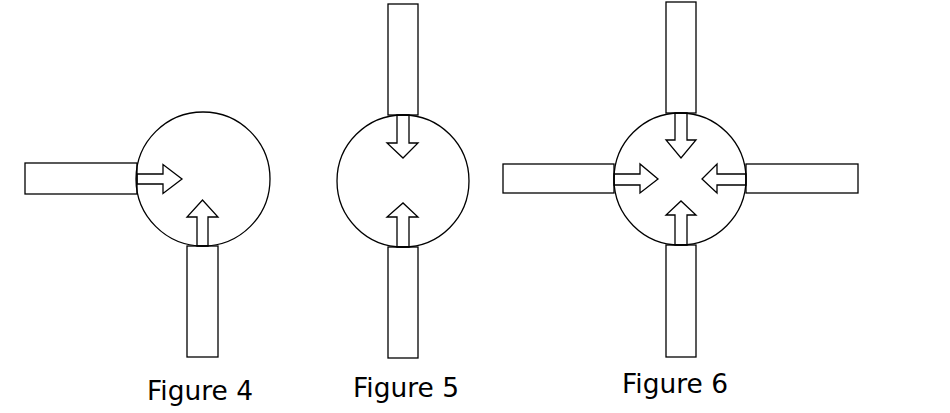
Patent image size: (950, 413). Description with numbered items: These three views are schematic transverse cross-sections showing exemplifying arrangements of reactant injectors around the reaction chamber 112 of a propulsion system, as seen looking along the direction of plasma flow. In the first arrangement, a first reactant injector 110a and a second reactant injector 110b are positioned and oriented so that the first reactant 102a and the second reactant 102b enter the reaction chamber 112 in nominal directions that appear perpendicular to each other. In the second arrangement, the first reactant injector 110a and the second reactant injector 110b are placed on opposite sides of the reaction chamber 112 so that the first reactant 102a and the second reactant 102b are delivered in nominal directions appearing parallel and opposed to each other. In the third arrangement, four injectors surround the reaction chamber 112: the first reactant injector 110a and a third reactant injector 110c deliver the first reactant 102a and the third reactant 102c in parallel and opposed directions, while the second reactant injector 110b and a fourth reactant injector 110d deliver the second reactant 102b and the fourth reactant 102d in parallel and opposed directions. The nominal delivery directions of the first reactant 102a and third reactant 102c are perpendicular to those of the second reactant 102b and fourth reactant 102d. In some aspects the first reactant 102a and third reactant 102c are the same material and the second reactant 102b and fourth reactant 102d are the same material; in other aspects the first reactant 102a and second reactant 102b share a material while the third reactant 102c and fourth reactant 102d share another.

In FIG. 4, the reaction chamber 112 is at (227, 188).
In FIG. 5, the reaction chamber 112 is at (421, 188).
In FIG. 6, the reaction chamber 112 is at (695, 188).
In FIG. 4, the first reactant injector 110a is at (92, 195).
In FIG. 5, the first reactant injector 110a is at (388, 62).
In FIG. 6, the first reactant injector 110a is at (557, 163).
In FIG. 4, the second reactant injector 110b is at (188, 312).
In FIG. 5, the second reactant injector 110b is at (418, 312).
In FIG. 6, the second reactant injector 110b is at (696, 312).
In FIG. 6, the third reactant injector 110c is at (816, 163).
In FIG. 6, the fourth reactant injector 110d is at (697, 60).
In FIG. 4, the first reactant 102a is at (153, 170).
In FIG. 5, the first reactant 102a is at (397, 130).
In FIG. 6, the first reactant 102a is at (627, 172).
In FIG. 4, the second reactant 102b is at (208, 222).
In FIG. 5, the second reactant 102b is at (410, 228).
In FIG. 6, the second reactant 102b is at (688, 228).
In FIG. 6, the third reactant 102c is at (730, 172).
In FIG. 6, the fourth reactant 102d is at (688, 130).